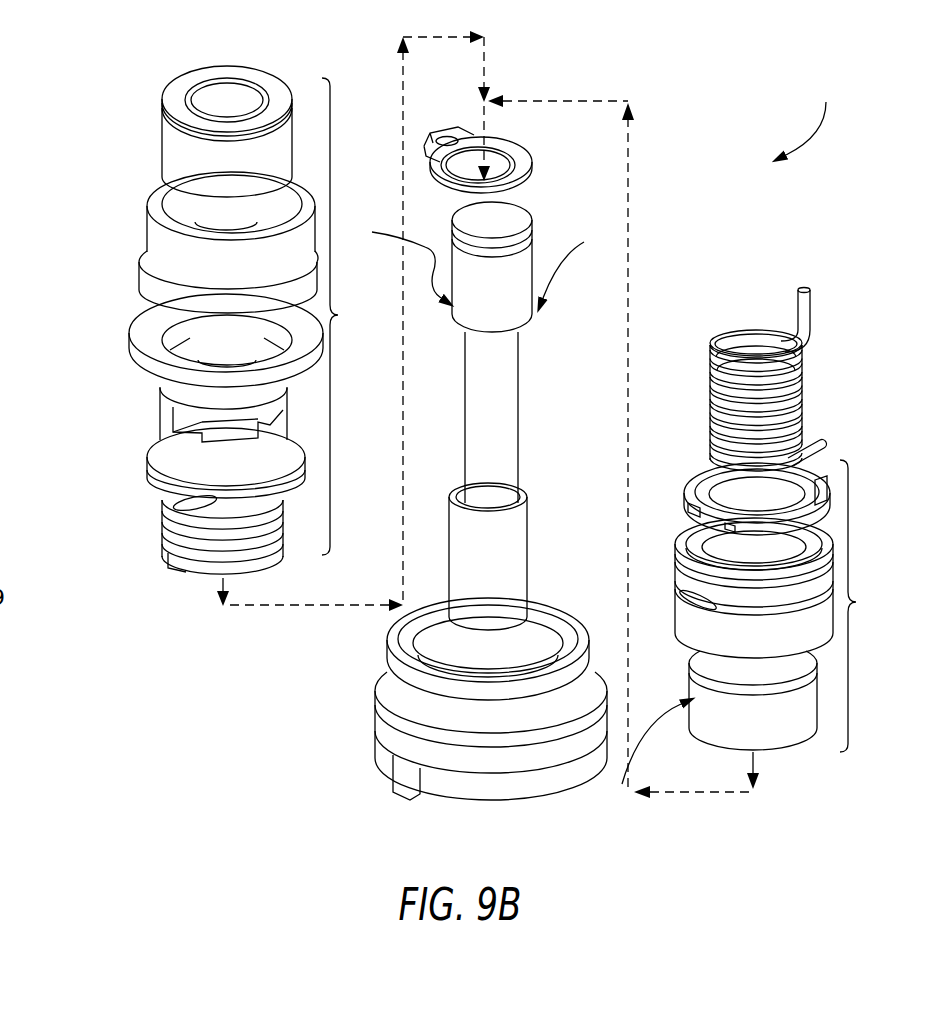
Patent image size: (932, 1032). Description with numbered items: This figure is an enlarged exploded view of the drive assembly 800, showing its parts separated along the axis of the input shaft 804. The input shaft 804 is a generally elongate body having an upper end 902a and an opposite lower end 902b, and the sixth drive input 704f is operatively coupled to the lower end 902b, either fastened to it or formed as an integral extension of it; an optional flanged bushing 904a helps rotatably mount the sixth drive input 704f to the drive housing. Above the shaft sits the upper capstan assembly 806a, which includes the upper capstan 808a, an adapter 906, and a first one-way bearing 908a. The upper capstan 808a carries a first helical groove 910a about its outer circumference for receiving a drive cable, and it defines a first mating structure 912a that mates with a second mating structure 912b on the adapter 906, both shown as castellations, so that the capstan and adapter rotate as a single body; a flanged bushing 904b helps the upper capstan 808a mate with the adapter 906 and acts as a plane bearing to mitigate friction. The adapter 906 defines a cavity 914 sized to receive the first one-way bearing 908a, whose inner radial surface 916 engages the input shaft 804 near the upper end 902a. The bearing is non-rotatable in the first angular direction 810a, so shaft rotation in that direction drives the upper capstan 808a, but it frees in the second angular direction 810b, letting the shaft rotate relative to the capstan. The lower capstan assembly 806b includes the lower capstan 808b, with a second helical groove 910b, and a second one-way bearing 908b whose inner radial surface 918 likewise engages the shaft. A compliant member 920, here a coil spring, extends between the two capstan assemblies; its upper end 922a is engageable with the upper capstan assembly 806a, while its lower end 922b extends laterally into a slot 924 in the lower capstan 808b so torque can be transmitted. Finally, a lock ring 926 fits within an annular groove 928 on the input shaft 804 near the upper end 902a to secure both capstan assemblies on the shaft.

The drive assembly 800 is at (814, 116).
The sixth drive input 704f is at (380, 738).
The input shaft 804 is at (465, 419).
The upper capstan assembly 806a is at (358, 316).
The lower capstan assembly 806b is at (879, 606).
The upper capstan 808a is at (156, 452).
The lower capstan 808b is at (701, 551).
The first angular direction 810a is at (580, 260).
The second angular direction 810b is at (390, 255).
The upper end 902a is at (454, 252).
The lower end 902b is at (443, 600).
The flanged bushing 904a is at (392, 655).
The flanged bushing 904b is at (130, 360).
The adapter 906 is at (178, 197).
The first one-way bearing 908a is at (168, 115).
The second one-way bearing 908b is at (632, 761).
The first helical groove 910a is at (172, 548).
The second helical groove 910b is at (686, 547).
The first mating structure 912a is at (156, 408).
The second mating structure 912b is at (216, 221).
The cavity 914 is at (277, 198).
The inner radial surface 916 is at (202, 100).
The inner radial surface 918 is at (750, 672).
The compliant member 920 is at (702, 385).
The upper end 922a is at (831, 298).
The lower end 922b is at (810, 430).
The slot 924 is at (820, 480).
The lock ring 926 is at (519, 173).
The annular groove 928 is at (528, 242).